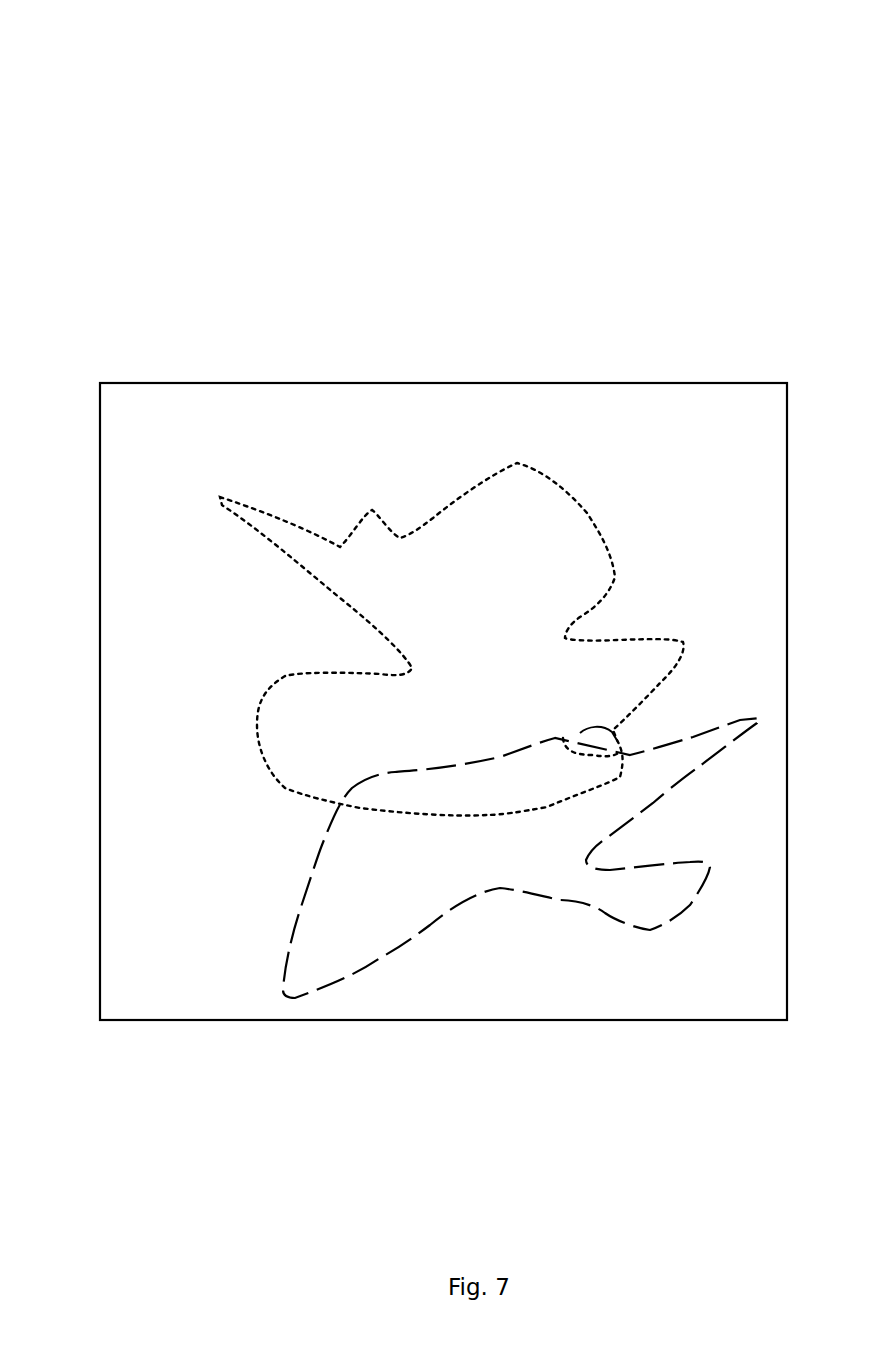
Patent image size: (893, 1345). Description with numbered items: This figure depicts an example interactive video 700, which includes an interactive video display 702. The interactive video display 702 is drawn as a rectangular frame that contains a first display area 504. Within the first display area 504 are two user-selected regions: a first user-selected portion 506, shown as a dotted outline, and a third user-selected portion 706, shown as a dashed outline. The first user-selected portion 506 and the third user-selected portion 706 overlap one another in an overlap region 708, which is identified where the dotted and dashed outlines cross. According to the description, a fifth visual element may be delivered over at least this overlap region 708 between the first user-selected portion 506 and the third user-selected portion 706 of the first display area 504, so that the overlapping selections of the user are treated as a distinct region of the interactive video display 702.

The interactive video 700 is at (100, 74).
The interactive video display 702 is at (377, 383).
The first display area 504 is at (222, 454).
The first user-selected portion 506 is at (472, 589).
The third user-selected portion 706 is at (528, 861).
The overlap region 708 is at (567, 776).